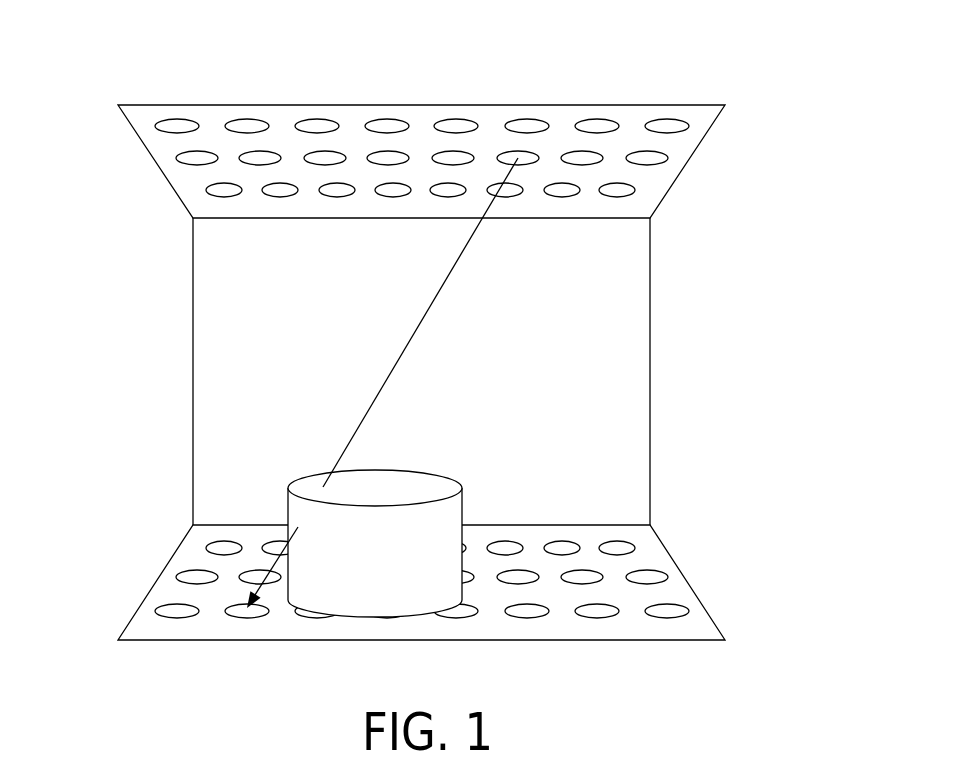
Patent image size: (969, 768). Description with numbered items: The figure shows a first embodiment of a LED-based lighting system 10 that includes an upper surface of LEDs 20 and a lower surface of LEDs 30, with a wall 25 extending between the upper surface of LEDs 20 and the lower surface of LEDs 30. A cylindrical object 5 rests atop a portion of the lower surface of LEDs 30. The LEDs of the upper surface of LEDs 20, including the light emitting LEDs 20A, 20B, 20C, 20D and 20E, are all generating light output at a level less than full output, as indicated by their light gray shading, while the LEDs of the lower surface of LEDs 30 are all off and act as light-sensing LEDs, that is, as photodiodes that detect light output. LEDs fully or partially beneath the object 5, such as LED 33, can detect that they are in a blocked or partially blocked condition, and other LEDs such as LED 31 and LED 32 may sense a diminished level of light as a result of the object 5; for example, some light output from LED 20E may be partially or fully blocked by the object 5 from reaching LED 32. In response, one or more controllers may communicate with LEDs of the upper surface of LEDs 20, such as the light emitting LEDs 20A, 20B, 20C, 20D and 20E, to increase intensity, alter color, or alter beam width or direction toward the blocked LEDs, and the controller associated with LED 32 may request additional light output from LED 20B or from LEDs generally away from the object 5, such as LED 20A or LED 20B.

The LED-based lighting system 10 is at (97, 77).
The upper surface of LEDs 20 is at (457, 130).
The light emitting LED 20A is at (180, 122).
The light emitting LED 20B is at (249, 122).
The light emitting LED 20C is at (319, 122).
The light emitting LED 20D is at (388, 122).
The light emitting LED 20E is at (505, 155).
The wall 25 is at (632, 349).
The lower surface of LEDs 30 is at (457, 610).
The LED 31 is at (178, 617).
The LED 32 is at (243, 617).
The LED 33 is at (300, 612).
The cylindrical object 5 is at (450, 518).